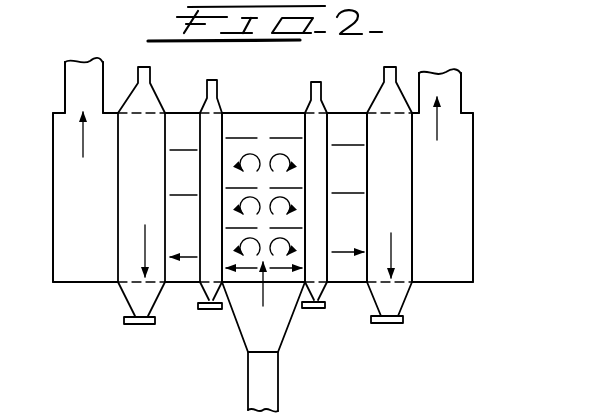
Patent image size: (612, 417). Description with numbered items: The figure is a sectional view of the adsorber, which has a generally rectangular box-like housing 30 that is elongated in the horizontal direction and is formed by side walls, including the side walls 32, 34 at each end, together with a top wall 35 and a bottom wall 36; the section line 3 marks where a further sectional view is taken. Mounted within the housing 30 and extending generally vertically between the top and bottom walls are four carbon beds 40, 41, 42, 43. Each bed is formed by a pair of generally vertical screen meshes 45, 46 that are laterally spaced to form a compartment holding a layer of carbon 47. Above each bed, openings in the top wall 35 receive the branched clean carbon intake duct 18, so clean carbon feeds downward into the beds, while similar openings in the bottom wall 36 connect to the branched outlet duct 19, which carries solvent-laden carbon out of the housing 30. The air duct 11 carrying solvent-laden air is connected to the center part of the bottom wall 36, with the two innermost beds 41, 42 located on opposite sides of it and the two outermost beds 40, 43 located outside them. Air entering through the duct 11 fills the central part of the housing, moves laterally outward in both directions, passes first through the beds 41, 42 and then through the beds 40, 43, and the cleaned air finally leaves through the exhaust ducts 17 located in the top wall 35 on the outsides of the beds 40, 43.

The section line 3- 3 is at (40, 92).
The exhaust duct 11 is at (280, 393).
The exhaust duct 17 is at (106, 62).
The clean carbon intake duct 18 is at (141, 67).
The duct 19 is at (140, 325).
The housing 30 is at (500, 130).
The side wall 32 is at (53, 262).
The side wall 34 is at (473, 232).
The top wall 35 is at (232, 112).
The bottom wall 36 is at (182, 283).
The carbon bed 40 is at (366, 110).
The carbon bed 41 is at (302, 118).
The carbon bed 42 is at (193, 118).
The carbon bed 43 is at (128, 166).
The screen mesh 45 is at (412, 240).
The screen mesh 46 is at (366, 243).
The layer of carbon 47 is at (403, 199).